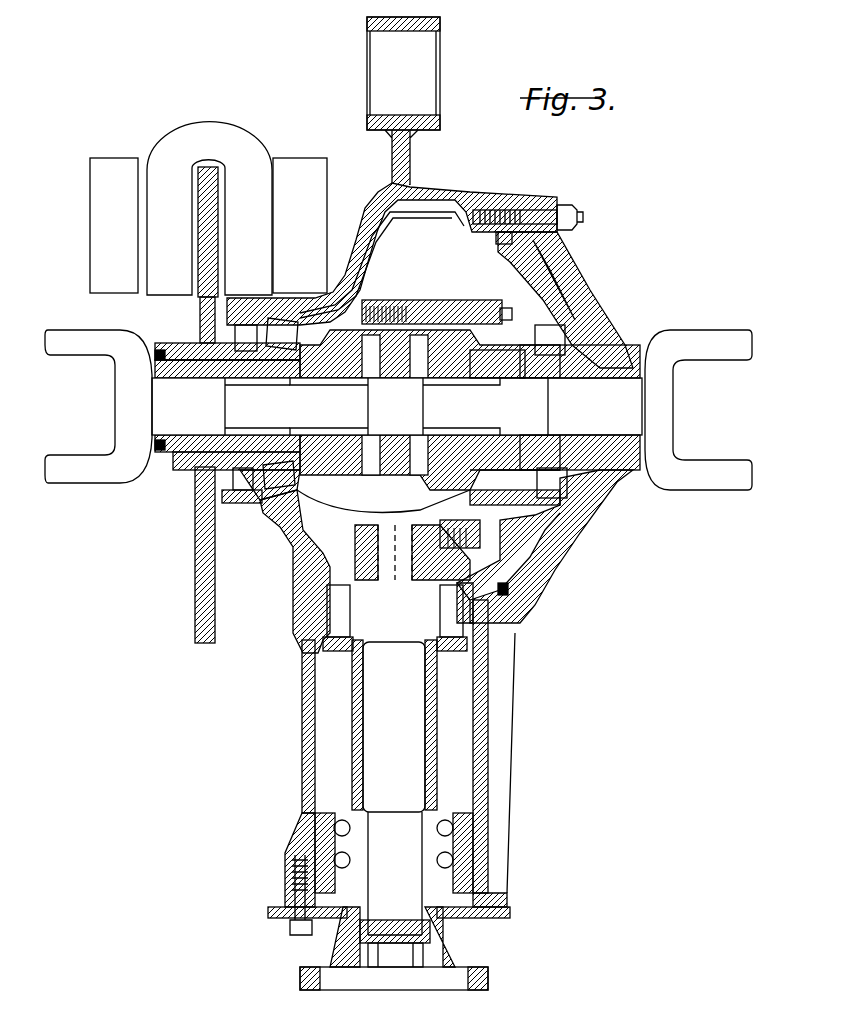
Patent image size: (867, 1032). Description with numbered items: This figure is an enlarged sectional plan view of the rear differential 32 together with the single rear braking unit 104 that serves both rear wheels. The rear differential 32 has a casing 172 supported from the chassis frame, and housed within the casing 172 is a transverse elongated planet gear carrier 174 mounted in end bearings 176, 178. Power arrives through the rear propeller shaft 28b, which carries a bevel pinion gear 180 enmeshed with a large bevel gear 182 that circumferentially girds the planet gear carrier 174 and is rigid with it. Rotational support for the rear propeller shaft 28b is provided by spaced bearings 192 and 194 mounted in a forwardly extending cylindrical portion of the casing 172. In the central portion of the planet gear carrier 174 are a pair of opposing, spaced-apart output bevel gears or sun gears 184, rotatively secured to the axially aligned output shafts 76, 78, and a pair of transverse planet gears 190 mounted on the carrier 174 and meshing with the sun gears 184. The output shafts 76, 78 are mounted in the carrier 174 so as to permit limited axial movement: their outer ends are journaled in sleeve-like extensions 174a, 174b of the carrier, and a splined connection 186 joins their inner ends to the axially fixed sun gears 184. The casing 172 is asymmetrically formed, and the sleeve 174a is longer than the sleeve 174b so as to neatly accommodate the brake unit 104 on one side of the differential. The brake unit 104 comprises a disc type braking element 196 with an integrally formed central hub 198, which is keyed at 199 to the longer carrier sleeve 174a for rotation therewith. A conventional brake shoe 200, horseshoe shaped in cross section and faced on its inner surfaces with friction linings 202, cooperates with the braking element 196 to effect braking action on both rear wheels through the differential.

The rear propeller shaft 28b is at (413, 762).
The rear differential 32 is at (585, 270).
The output shaft 76 is at (210, 418).
The output shaft 78 is at (640, 370).
The rear braking unit 104 is at (192, 112).
The casing 172 is at (568, 296).
The planet gear carrier 174 is at (470, 488).
The sleeve-like extension 174a is at (188, 343).
The sleeve-like extension 174b is at (572, 340).
The end bearing 176 is at (256, 512).
The end bearing 178 is at (575, 500).
The bevel pinion gear 180 is at (368, 562).
The large bevel gear 182 is at (535, 578).
The output bevel gears 184 is at (445, 345).
The splined connection 186 is at (345, 391).
The planet gears 190 is at (343, 500).
The bearing 192 is at (500, 630).
The bearing 194 is at (460, 860).
The disc type braking element 196 is at (195, 600).
The central hub 198 is at (185, 470).
The key 199 is at (250, 445).
The brake shoe 200 is at (256, 150).
The friction linings 202 is at (222, 226).